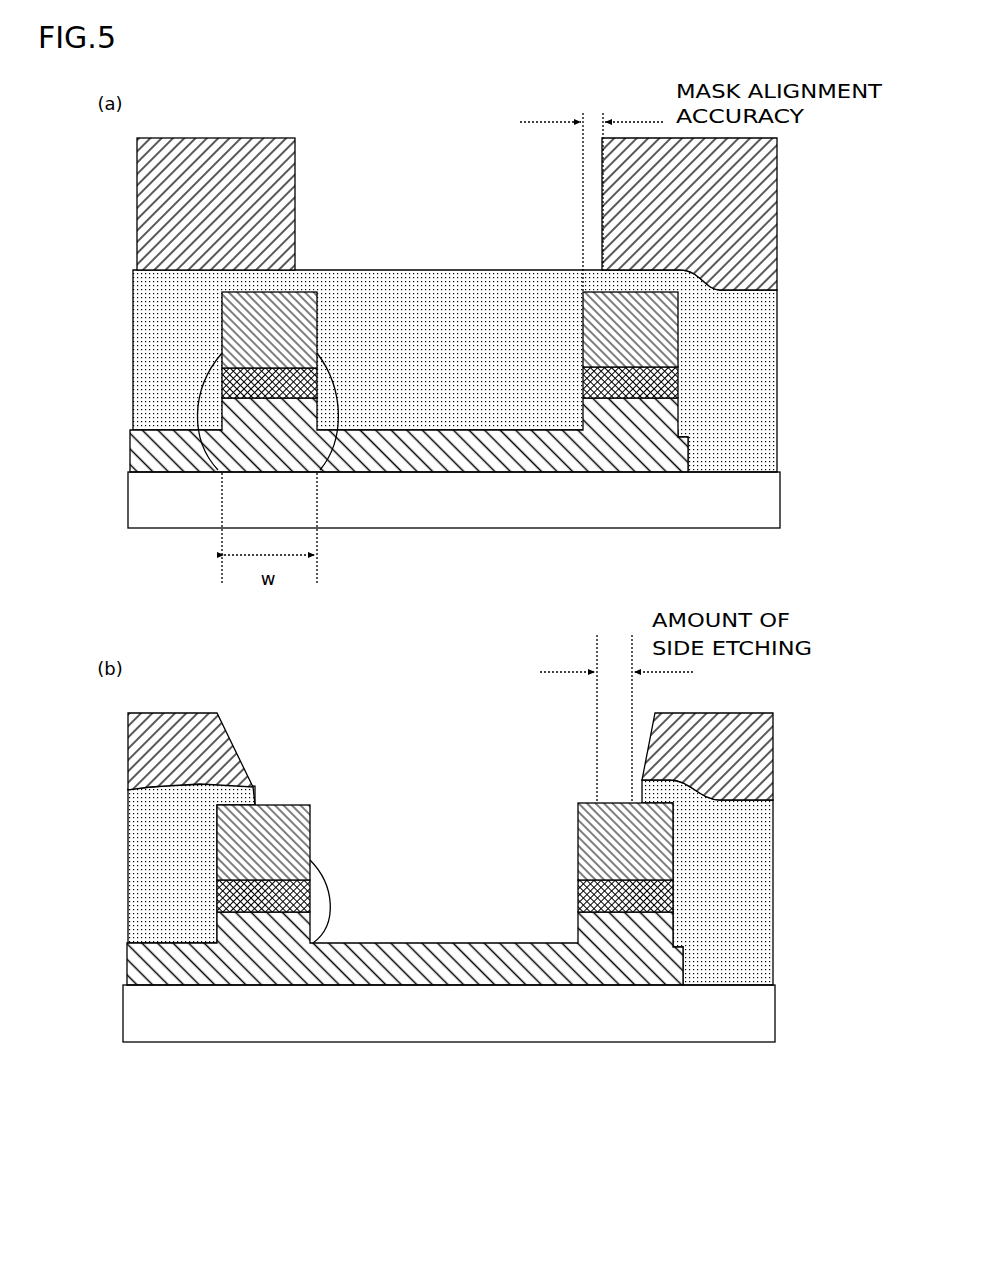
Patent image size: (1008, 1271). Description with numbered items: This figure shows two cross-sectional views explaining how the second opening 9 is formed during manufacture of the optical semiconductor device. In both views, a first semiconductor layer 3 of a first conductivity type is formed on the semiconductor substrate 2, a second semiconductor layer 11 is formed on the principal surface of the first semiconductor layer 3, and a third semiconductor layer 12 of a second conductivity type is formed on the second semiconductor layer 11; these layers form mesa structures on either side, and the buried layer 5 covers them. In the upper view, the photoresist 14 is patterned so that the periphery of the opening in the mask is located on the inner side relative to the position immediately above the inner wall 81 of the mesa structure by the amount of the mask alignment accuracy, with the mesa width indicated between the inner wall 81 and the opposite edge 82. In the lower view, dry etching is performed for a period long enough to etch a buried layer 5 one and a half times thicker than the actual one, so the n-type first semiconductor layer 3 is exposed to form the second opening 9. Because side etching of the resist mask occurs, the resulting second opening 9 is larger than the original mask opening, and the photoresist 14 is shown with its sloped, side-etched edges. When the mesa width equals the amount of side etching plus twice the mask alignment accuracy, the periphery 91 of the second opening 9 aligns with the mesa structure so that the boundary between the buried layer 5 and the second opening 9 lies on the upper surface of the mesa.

The semiconductor substrate 2 is at (750, 500).
The first semiconductor layer 3 is at (675, 445).
The buried layer 5 is at (514, 298).
The second opening 9 is at (440, 835).
The second semiconductor layer 11 is at (660, 386).
The third semiconductor layer 12 is at (665, 348).
The photoresist 14 is at (277, 197).
The inner wall of mesa structure 81 is at (320, 471).
The left edge of stack 82 is at (215, 471).
The periphery of second opening 91 is at (253, 793).